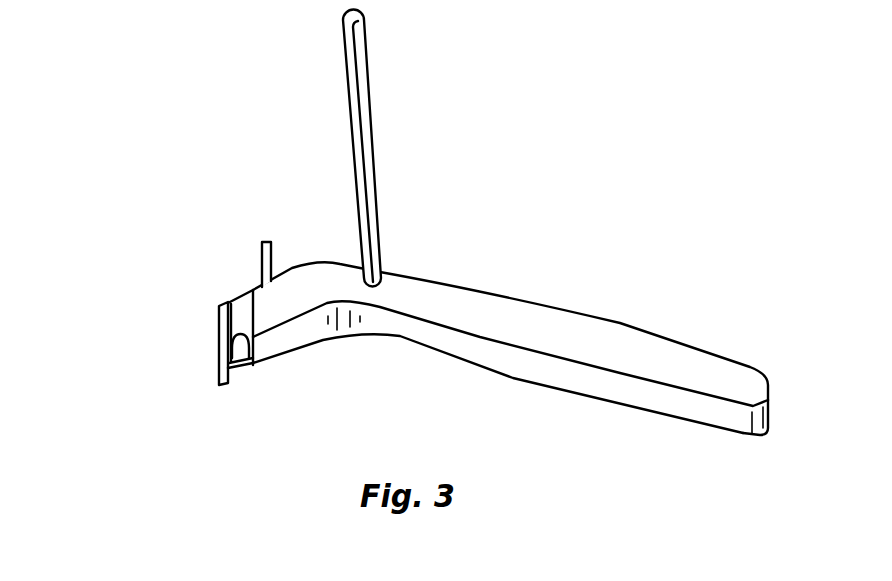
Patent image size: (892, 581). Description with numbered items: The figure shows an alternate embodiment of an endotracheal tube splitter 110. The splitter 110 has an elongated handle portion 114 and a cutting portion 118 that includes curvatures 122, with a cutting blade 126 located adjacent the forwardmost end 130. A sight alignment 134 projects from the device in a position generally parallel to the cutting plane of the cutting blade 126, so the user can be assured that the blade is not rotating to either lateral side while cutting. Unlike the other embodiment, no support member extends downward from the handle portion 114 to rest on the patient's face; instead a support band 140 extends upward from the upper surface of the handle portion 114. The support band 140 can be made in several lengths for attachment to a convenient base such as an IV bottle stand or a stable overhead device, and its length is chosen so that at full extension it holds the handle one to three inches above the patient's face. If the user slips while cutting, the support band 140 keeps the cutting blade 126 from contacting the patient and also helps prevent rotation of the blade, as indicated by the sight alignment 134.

The endotracheal tube splitter 110 is at (410, 234).
The handle portion 114 is at (620, 343).
The cutting portion 118 is at (186, 321).
The curvatures 122 is at (248, 324).
The cutting blade 126 is at (233, 365).
The forwardmost end 130 is at (219, 335).
The sight alignment 134 is at (277, 248).
The support band 140 is at (370, 100).